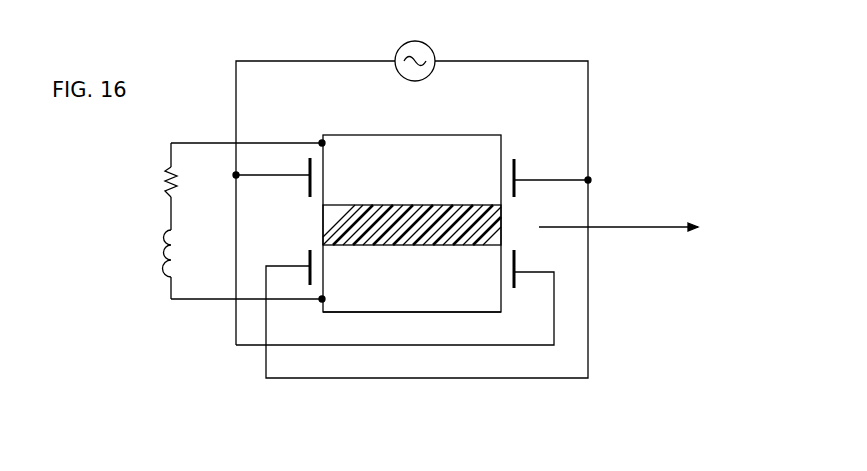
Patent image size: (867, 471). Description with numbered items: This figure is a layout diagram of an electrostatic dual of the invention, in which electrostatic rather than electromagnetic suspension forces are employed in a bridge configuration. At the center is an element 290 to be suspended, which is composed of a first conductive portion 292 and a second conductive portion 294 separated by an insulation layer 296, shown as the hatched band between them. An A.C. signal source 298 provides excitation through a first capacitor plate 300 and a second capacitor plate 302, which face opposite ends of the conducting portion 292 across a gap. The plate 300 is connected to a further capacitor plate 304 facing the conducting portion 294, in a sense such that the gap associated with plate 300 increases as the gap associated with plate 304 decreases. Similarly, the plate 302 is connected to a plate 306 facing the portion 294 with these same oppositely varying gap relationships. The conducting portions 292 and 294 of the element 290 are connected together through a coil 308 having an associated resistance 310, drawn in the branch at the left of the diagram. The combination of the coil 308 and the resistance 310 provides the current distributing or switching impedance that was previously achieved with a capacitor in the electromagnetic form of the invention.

The element to be suspended 290 is at (512, 222).
The first conductive portion 292 is at (449, 146).
The second conductive portion 294 is at (372, 300).
The insulation layer 296 is at (383, 233).
The A.C. signal source 298 is at (430, 48).
The first capacitor plate 300 is at (308, 166).
The second capacitor plate 302 is at (516, 171).
The further capacitor plate 304 is at (517, 258).
The capacitor plate 306 is at (308, 258).
The coil 308 is at (163, 253).
The resistance 310 is at (163, 185).